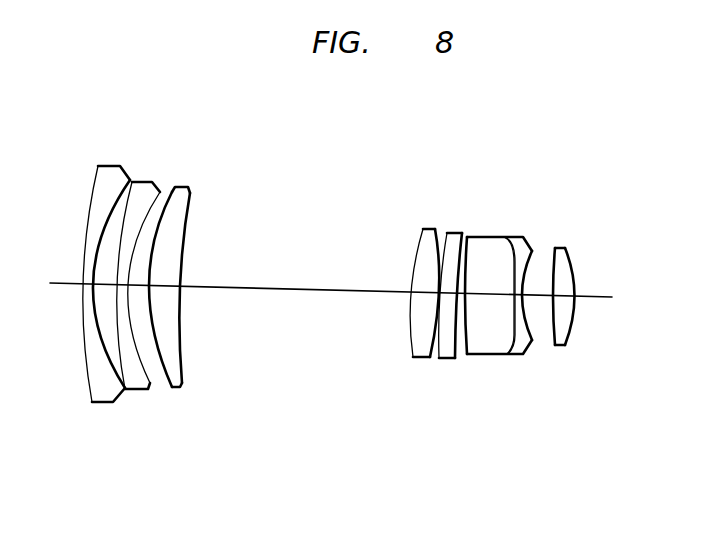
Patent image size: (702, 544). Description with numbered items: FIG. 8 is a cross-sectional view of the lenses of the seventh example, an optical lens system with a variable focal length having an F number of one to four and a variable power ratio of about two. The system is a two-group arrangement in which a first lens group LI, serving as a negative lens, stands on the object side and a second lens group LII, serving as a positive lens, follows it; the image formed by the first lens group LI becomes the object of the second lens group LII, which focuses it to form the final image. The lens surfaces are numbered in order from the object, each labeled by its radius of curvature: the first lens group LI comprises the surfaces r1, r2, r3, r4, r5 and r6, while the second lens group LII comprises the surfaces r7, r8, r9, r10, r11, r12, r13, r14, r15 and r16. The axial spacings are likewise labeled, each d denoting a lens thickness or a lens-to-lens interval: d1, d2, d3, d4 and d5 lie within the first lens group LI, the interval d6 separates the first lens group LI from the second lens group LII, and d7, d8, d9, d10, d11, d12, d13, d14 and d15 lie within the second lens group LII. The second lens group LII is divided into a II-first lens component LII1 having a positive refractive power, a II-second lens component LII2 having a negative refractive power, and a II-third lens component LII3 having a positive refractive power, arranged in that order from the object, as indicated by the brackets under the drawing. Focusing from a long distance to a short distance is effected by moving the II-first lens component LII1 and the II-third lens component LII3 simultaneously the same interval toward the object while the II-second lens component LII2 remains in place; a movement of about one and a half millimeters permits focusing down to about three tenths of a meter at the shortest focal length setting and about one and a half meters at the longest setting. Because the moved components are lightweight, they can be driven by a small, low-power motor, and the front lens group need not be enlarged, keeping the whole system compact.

The radius of curvature of first lens surface r1 is at (94, 190).
The radius of curvature of second lens surface r2 is at (122, 192).
The radius of curvature of third lens surface r3 is at (145, 182).
The radius of curvature of fourth lens surface r4 is at (163, 190).
The radius of curvature of fifth lens surface r5 is at (172, 192).
The radius of curvature of sixth lens surface r6 is at (190, 193).
The radius of curvature of seventh lens surface r7 is at (417, 231).
The radius of curvature of eighth lens surface r8 is at (424, 231).
The radius of curvature of ninth lens surface r9 is at (441, 233).
The radius of curvature of tenth lens surface r10 is at (449, 233).
The radius of curvature of eleventh lens surface r11 is at (461, 233).
The radius of curvature of twelfth lens surface r12 is at (470, 234).
The radius of curvature of thirteenth lens surface r13 is at (503, 236).
The radius of curvature of fourteenth lens surface r14 is at (537, 243).
The radius of curvature of fifteenth lens surface r15 is at (552, 247).
The radius of curvature of sixteenth lens surface r16 is at (572, 250).
The lens thickness d1 is at (88, 284).
The lens-to-lens interval d2 is at (104, 284).
The lens thickness d3 is at (122, 285).
The lens-to-lens interval d4 is at (138, 285).
The lens thickness d5 is at (165, 286).
The lens-to-lens interval d6 is at (320, 290).
The lens thickness d7 is at (425, 292).
The lens-to-lens interval d8 is at (438, 293).
The lens thickness d9 is at (449, 293).
The lens-to-lens interval d10 is at (462, 293).
The lens thickness d11 is at (490, 294).
The lens-to-lens interval d12 is at (518, 295).
The lens thickness d13 is at (527, 295).
The lens-to-lens interval d14 is at (548, 295).
The lens thickness d15 is at (575, 296).
The first lens group LI is at (192, 108).
The second lens group LII is at (568, 117).
The II-first lens component LII1 is at (457, 480).
The II-second lens component LII2 is at (528, 480).
The II-third lens component LII3 is at (562, 480).